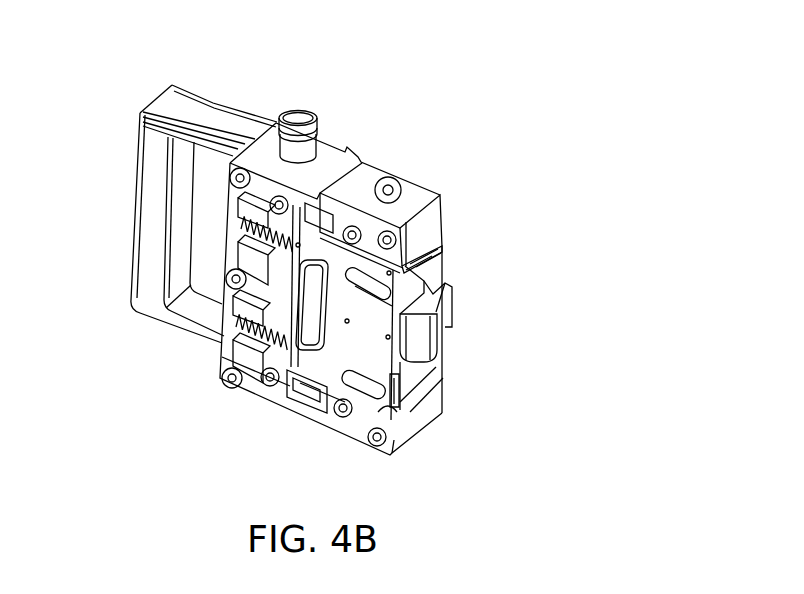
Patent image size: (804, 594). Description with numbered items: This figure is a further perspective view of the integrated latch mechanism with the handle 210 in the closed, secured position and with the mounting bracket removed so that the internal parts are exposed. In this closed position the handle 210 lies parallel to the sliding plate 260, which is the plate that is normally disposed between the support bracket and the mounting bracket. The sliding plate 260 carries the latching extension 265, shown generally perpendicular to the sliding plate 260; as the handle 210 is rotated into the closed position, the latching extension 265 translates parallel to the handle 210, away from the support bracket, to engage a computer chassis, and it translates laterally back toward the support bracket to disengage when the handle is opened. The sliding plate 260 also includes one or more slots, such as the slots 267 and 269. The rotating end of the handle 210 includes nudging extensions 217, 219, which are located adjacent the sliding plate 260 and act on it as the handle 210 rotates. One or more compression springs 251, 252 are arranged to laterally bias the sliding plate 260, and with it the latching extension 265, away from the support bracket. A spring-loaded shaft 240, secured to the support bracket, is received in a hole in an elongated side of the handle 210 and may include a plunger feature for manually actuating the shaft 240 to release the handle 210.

The handle 210 is at (137, 188).
The spring-loaded shaft 240 is at (300, 123).
The compression spring 252 is at (240, 249).
The compression spring 251 is at (232, 348).
The slot 269 is at (405, 267).
The latching extension 265 is at (452, 313).
The nudging extension 217 is at (408, 360).
The nudging extension 219 is at (405, 441).
The slot 267 is at (347, 420).
The sliding plate 260 is at (332, 353).